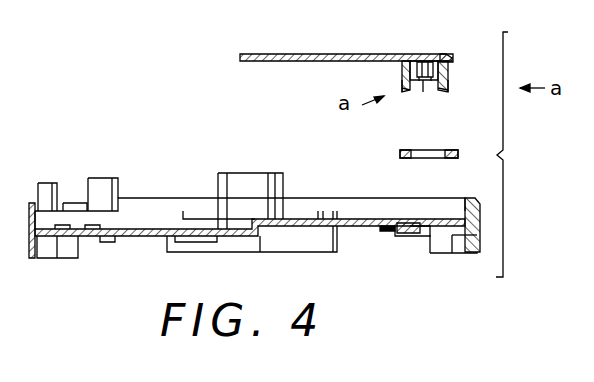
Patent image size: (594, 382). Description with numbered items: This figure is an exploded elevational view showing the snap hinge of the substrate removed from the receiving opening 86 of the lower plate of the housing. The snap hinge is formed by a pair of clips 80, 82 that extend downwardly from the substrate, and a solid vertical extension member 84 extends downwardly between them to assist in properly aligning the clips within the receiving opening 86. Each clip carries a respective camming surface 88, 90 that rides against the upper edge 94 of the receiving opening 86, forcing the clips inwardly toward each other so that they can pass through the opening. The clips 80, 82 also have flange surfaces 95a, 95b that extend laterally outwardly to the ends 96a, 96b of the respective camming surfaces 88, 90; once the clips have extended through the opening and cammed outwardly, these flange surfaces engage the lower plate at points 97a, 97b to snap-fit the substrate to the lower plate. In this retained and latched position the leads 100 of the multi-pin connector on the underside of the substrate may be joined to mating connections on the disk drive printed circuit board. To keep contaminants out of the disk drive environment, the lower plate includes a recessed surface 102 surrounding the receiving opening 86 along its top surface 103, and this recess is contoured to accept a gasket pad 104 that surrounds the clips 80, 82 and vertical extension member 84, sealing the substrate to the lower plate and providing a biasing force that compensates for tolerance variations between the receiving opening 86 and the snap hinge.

The clip 80 is at (402, 63).
The clip 82 is at (452, 61).
The vertical extension member 84 is at (435, 58).
The receiving opening 86 is at (445, 233).
The camming surface 88 is at (407, 90).
The camming surface 90 is at (441, 88).
The upper edge 94 is at (413, 230).
The flange surface 95a is at (400, 83).
The flange surface 95b is at (450, 82).
The end of camming surface 96a is at (400, 88).
The end of camming surface 96b is at (450, 86).
The engagement point 97a is at (405, 235).
The engagement point 97b is at (456, 236).
The leads 100 is at (421, 82).
The recessed surface 102 is at (480, 225).
The top surface 103 is at (393, 229).
The gasket pad 104 is at (400, 153).